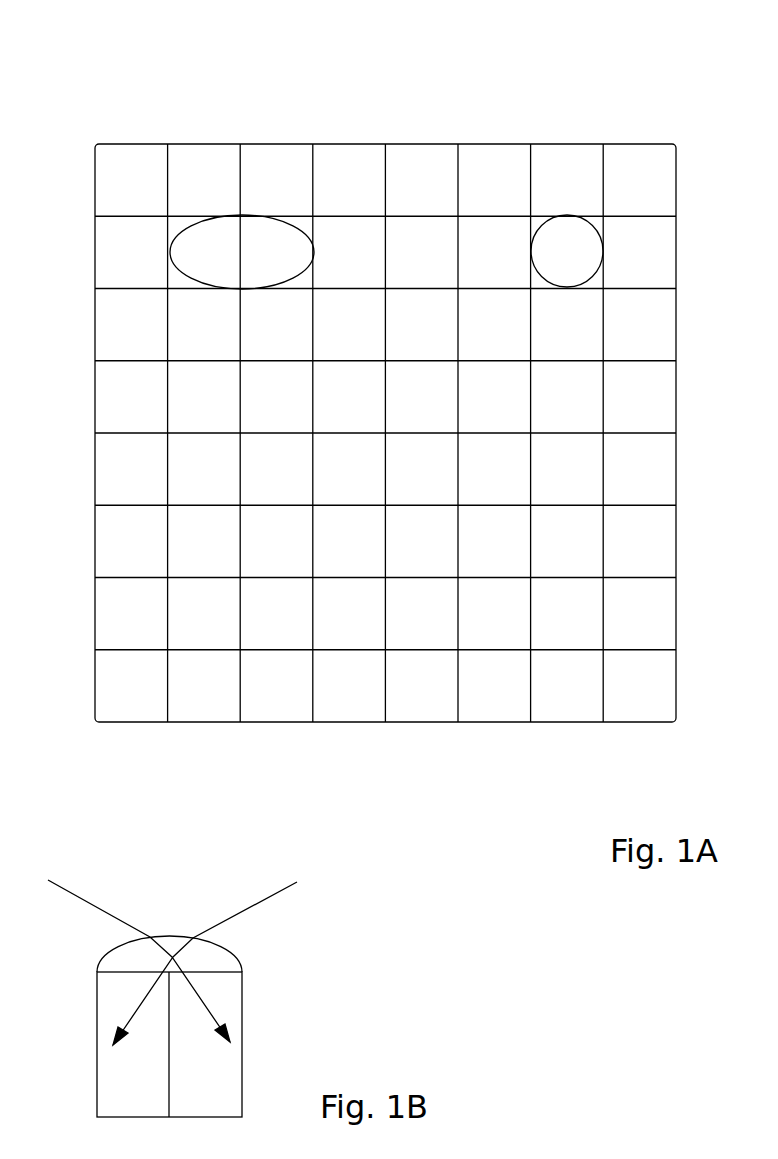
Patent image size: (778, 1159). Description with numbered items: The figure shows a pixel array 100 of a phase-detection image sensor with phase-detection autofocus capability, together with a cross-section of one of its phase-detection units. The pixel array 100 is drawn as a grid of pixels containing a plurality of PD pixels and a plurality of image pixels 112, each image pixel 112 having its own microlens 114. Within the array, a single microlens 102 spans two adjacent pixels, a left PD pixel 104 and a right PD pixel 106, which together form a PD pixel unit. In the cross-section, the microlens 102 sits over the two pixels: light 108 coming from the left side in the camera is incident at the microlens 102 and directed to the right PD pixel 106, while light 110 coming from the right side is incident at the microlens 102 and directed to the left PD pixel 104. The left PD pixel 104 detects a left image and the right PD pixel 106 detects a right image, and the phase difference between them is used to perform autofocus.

In FIG. 1A, the pixel array 100 is at (164, 72).
In FIG. 1A, the microlens 102 is at (290, 225).
In FIG. 1B, the microlens 102 is at (233, 952).
In FIG. 1A, the left PD pixel 104 is at (225, 266).
In FIG. 1B, the left PD pixel 104 is at (158, 1096).
In FIG. 1A, the right PD pixel 106 is at (293, 266).
In FIG. 1B, the right PD pixel 106 is at (227, 1096).
In FIG. 1B, the light 108 is at (80, 895).
In FIG. 1B, the light 110 is at (268, 895).
In FIG. 1A, the image pixel 112 is at (587, 266).
In FIG. 1A, the microlens 114 is at (597, 225).